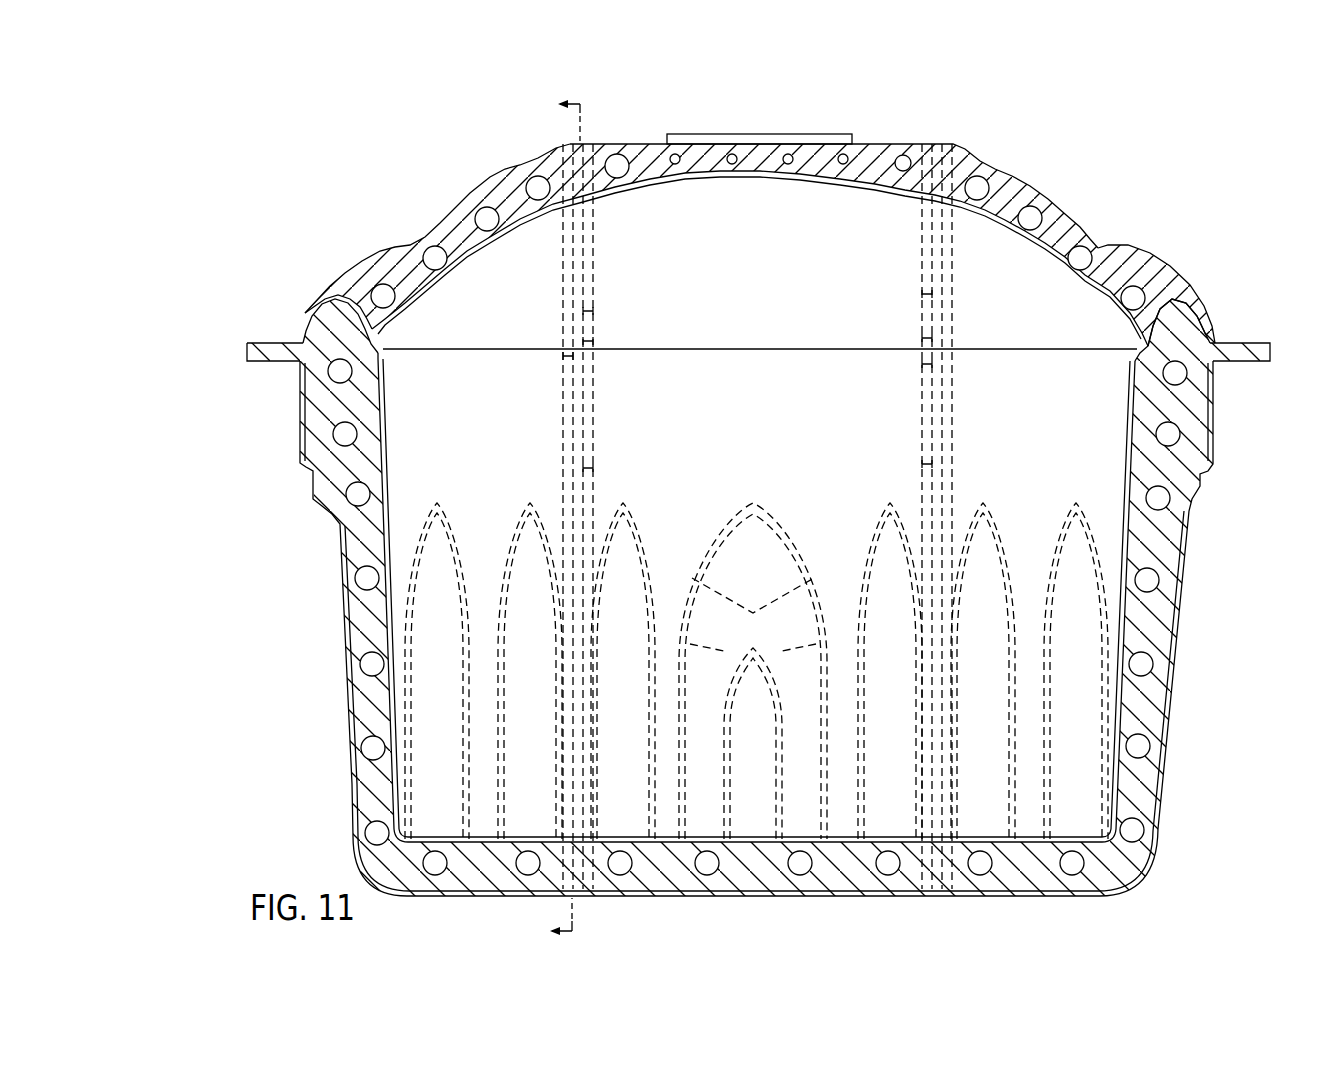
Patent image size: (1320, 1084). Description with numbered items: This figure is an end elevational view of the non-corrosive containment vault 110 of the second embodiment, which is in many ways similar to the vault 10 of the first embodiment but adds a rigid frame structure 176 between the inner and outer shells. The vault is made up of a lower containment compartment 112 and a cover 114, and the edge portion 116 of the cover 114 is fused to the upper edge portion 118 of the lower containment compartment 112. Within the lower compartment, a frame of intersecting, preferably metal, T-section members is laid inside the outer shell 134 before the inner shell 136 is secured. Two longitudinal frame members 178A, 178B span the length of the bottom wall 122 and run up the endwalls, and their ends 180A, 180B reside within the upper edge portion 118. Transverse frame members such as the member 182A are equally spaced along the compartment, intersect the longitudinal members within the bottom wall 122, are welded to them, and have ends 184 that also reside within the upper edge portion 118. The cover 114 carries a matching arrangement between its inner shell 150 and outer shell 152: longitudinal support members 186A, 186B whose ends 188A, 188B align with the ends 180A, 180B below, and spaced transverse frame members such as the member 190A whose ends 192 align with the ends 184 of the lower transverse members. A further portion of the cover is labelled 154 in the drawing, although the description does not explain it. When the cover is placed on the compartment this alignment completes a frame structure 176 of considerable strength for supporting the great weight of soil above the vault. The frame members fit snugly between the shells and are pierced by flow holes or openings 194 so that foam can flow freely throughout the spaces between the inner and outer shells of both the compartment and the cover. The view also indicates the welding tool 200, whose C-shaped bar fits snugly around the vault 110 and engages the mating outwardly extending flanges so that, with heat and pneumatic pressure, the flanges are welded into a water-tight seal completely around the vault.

The vault 10 is at (548, 521).
The non-corrosive containment vault 110 is at (1018, 120).
The lower containment compartment 112 is at (342, 602).
The cover 114 is at (1017, 192).
The edge portion of the cover 116 is at (1227, 347).
The upper edge portion of the lower compartment 118 is at (1233, 363).
The bottom wall 122 is at (697, 886).
The outer shell 134 is at (300, 413).
The inner shell 136 is at (388, 455).
The inner shell of the cover 150 is at (423, 305).
The outer shell of the cover 152 is at (382, 246).
The lid rim portion 154 is at (1127, 250).
The frame structure 176 is at (510, 200).
The longitudinal frame member 178A is at (598, 461).
The longitudinal frame member 178B is at (918, 463).
The end of longitudinal frame member 180A is at (560, 363).
The end of longitudinal frame member 180B is at (918, 365).
The transverse frame member 182A is at (1190, 493).
The ends of transverse frame members 184 is at (303, 368).
The longitudinal support member 186A is at (597, 302).
The longitudinal support member 186B is at (917, 292).
The end of longitudinal support member 188A is at (596, 332).
The end of longitudinal support member 188B is at (918, 337).
The transverse frame member of the cover 190A is at (597, 163).
The ends of cover transverse frame members 192 is at (367, 320).
The flow holes or openings 194 is at (905, 157).
The welding tool 200 is at (248, 345).